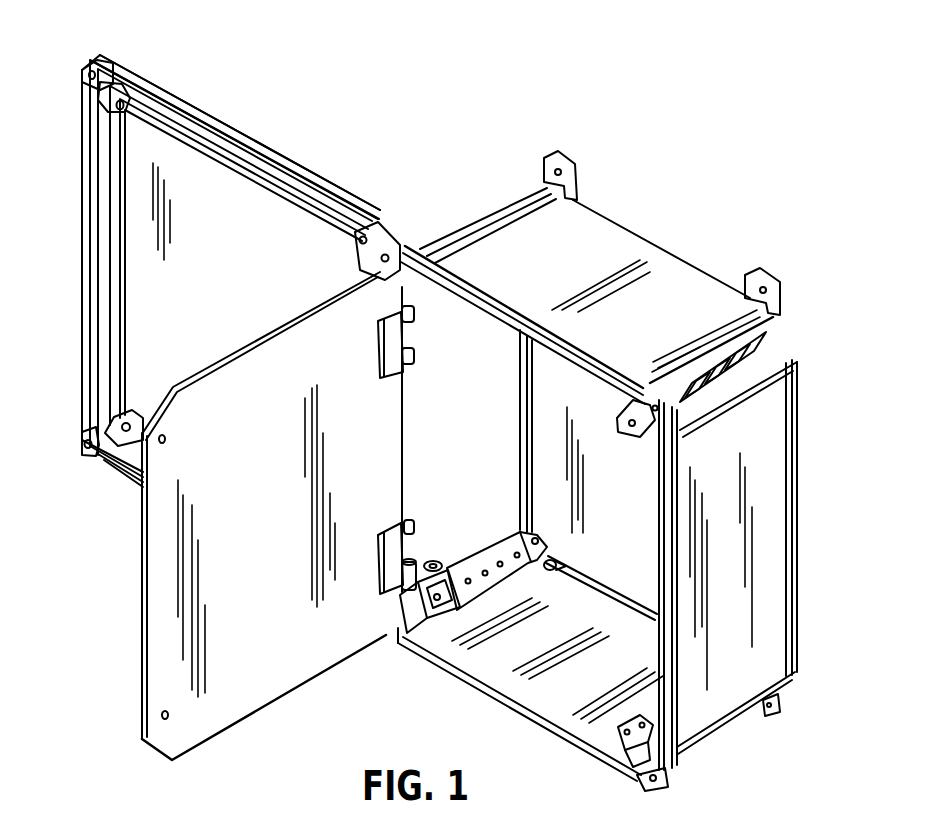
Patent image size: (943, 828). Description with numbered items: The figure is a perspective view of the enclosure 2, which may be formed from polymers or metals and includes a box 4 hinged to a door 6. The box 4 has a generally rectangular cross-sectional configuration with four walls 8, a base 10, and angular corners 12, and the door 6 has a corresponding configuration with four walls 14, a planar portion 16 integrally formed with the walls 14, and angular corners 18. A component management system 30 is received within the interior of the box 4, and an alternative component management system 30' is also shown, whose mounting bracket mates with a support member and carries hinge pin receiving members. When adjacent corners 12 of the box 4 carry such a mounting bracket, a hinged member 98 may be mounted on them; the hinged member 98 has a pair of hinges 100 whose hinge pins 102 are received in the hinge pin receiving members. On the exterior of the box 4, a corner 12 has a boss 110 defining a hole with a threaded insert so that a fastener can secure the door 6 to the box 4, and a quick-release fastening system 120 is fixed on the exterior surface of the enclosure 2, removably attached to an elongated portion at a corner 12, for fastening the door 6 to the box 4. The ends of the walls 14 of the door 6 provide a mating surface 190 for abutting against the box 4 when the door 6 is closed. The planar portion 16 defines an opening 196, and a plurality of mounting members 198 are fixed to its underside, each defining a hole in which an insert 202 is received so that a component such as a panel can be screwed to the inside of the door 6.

The enclosure 2 is at (447, 410).
The box 4 is at (619, 479).
The door 6 is at (68, 277).
The walls 8 is at (588, 225).
The base 10 is at (605, 547).
The angular corners 12 is at (406, 240).
The walls 14 is at (247, 150).
The planar portion 16 is at (138, 370).
The angular corners 18 is at (110, 62).
The component management system 30 is at (630, 458).
The alternative component management system 30' is at (483, 546).
The hinged member 98 is at (170, 675).
The hinges 100 is at (388, 336).
The hinge pins 102 is at (412, 312).
The boss 110 is at (692, 433).
The fastening system 120 is at (766, 344).
The mating surface 190 is at (148, 88).
The opening 196 is at (240, 236).
The mounting members 198 is at (118, 108).
The insert 202 is at (122, 90).